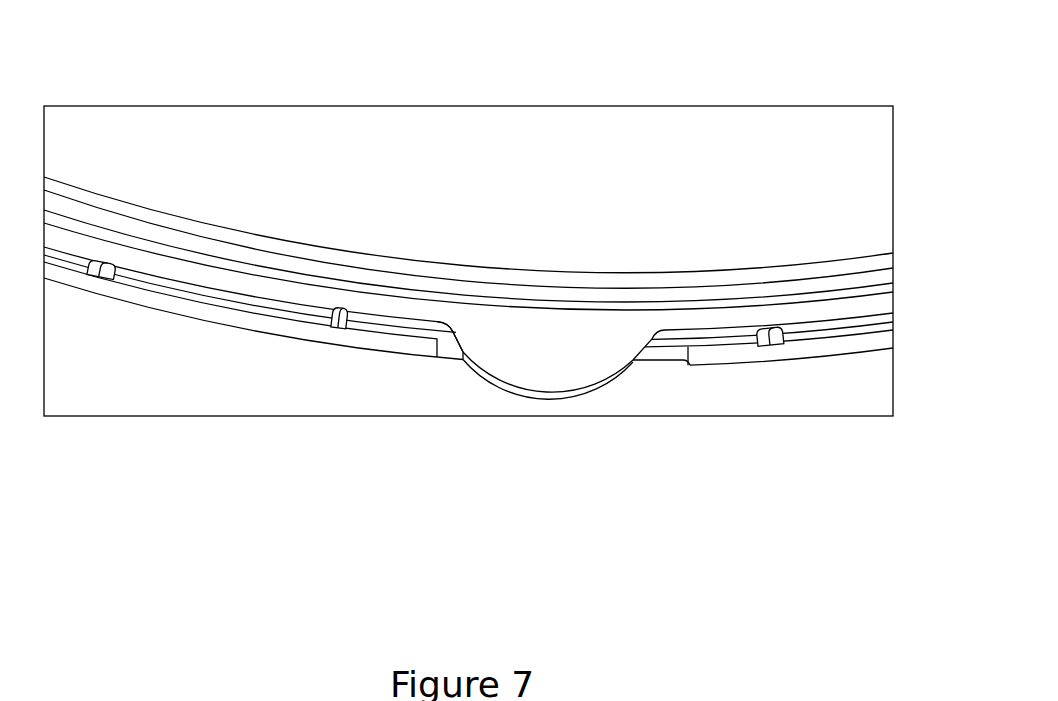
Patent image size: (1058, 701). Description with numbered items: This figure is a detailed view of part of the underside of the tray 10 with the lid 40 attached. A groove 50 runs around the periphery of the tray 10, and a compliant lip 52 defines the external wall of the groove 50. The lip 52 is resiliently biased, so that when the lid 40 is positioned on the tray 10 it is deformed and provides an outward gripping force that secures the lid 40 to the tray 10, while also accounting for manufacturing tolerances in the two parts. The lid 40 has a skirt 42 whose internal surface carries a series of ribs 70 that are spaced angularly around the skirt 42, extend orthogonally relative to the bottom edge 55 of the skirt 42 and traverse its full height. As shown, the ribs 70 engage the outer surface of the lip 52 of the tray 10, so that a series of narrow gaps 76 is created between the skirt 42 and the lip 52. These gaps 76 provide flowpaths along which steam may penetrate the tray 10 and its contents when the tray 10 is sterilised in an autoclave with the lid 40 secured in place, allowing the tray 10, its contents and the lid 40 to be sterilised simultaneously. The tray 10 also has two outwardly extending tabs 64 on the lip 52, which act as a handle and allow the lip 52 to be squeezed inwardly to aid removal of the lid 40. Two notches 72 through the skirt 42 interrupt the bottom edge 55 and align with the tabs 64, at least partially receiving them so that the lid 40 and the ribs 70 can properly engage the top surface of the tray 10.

The tray 10 is at (710, 190).
The lid 40 is at (192, 317).
The skirt 42 is at (840, 352).
The groove 50 is at (842, 287).
The compliant lip 52 is at (720, 318).
The bottom edge 55 is at (418, 357).
The outwardly extending tab 64 is at (567, 365).
The rib 70 is at (95, 277).
The notch 72 is at (665, 355).
The gap 76 is at (228, 303).